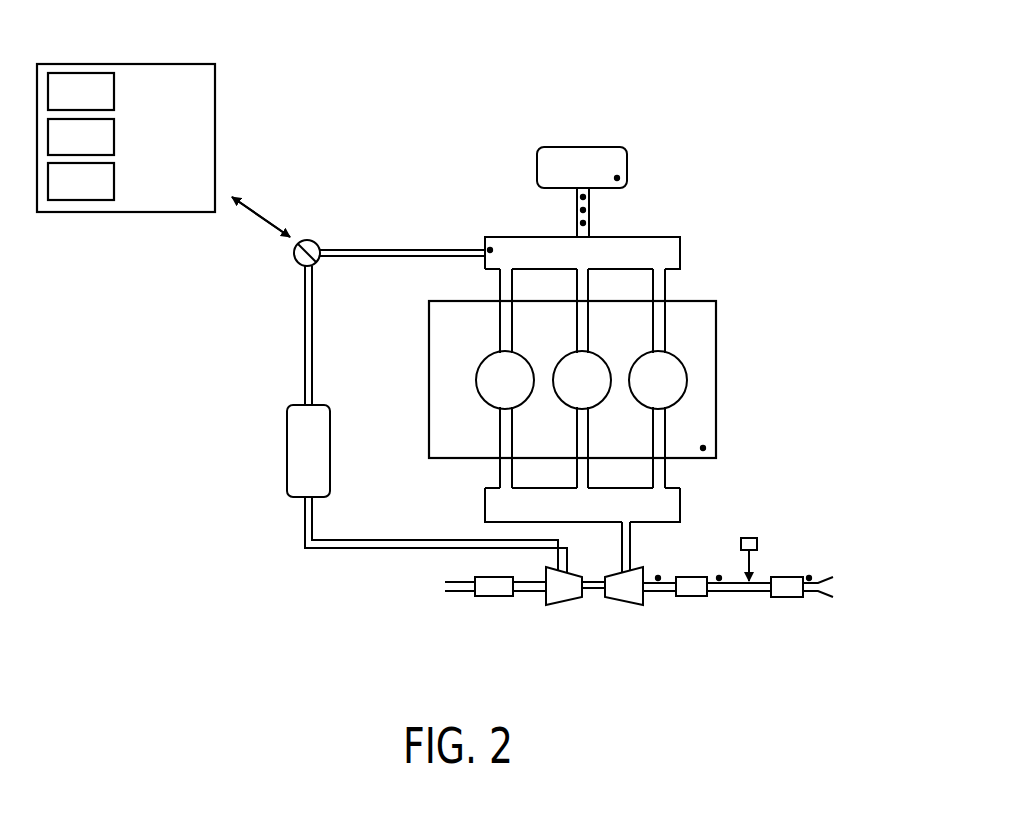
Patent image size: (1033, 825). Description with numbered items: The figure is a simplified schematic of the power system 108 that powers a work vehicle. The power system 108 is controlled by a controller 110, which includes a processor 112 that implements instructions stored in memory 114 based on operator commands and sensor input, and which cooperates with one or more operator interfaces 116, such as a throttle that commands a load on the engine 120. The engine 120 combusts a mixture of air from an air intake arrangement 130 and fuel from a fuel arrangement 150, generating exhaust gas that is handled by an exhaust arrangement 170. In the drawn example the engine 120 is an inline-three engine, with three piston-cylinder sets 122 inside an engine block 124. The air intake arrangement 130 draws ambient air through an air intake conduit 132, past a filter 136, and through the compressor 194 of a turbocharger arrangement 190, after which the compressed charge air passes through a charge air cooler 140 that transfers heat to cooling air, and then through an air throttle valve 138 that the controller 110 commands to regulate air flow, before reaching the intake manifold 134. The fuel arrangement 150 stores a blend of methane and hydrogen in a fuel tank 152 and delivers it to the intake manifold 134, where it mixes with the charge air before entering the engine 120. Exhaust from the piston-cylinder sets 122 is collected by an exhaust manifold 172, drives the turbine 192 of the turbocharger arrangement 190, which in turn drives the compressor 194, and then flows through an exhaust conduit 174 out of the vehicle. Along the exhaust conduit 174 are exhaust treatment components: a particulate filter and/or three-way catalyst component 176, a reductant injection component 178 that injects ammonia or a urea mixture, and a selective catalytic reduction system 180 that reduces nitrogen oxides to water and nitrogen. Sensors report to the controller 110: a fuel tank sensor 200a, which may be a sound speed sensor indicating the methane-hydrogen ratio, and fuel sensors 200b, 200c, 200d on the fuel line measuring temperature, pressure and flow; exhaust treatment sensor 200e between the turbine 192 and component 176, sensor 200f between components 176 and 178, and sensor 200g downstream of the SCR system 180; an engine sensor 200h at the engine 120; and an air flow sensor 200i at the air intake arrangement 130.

The power system 108 is at (270, 75).
The controller 110 is at (193, 194).
The processor 112 is at (100, 105).
The memory 114 is at (100, 150).
The operator interface 116 is at (100, 195).
The engine 120 is at (575, 378).
The piston-cylinder set 122 is at (525, 392).
The engine block 124 is at (447, 327).
The air intake arrangement 130 is at (403, 406).
The air intake conduit 132 is at (459, 595).
The intake manifold 134 is at (680, 250).
The filter 136 is at (497, 597).
The air throttle valve 138 is at (313, 241).
The charge air cooler 140 is at (287, 450).
The fuel arrangement 150 is at (552, 153).
The fuel tank 152 is at (590, 146).
The exhaust arrangement 170 is at (790, 573).
The exhaust manifold 172 is at (484, 500).
The exhaust conduit 174 is at (832, 597).
The exhaust treatment component 176 is at (690, 597).
The reductant injection component 178 is at (757, 541).
The selective catalytic reduction system 180 is at (790, 597).
The turbocharger arrangement 190 is at (606, 639).
The turbine 192 is at (622, 605).
The compressor 194 is at (562, 605).
The fuel tank sensor 200a is at (617, 178).
The fuel sensor 200b is at (586, 198).
The fuel sensor 200c is at (581, 210).
The fuel sensor 200d is at (587, 225).
The exhaust treatment sensor 200e is at (658, 576).
The exhaust treatment sensor 200f is at (719, 576).
The exhaust treatment sensor 200g is at (810, 576).
The engine sensor 200h is at (704, 446).
The air flow sensor 200i is at (490, 248).